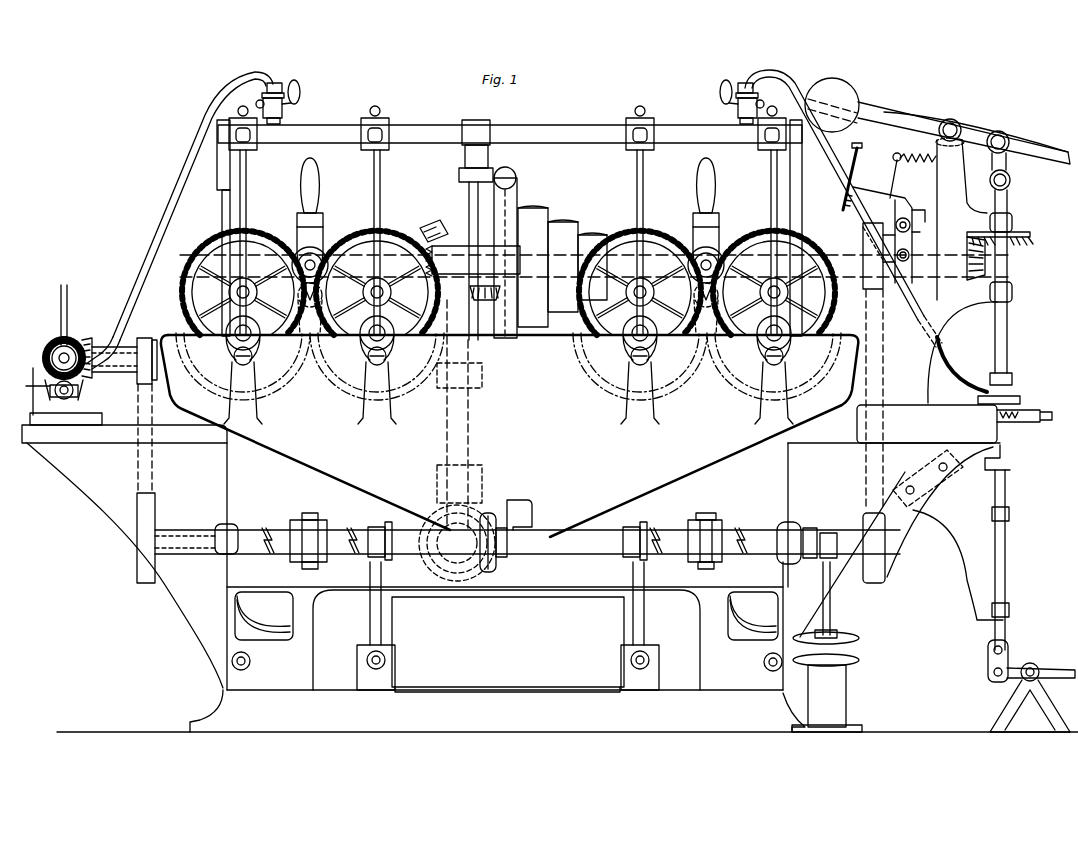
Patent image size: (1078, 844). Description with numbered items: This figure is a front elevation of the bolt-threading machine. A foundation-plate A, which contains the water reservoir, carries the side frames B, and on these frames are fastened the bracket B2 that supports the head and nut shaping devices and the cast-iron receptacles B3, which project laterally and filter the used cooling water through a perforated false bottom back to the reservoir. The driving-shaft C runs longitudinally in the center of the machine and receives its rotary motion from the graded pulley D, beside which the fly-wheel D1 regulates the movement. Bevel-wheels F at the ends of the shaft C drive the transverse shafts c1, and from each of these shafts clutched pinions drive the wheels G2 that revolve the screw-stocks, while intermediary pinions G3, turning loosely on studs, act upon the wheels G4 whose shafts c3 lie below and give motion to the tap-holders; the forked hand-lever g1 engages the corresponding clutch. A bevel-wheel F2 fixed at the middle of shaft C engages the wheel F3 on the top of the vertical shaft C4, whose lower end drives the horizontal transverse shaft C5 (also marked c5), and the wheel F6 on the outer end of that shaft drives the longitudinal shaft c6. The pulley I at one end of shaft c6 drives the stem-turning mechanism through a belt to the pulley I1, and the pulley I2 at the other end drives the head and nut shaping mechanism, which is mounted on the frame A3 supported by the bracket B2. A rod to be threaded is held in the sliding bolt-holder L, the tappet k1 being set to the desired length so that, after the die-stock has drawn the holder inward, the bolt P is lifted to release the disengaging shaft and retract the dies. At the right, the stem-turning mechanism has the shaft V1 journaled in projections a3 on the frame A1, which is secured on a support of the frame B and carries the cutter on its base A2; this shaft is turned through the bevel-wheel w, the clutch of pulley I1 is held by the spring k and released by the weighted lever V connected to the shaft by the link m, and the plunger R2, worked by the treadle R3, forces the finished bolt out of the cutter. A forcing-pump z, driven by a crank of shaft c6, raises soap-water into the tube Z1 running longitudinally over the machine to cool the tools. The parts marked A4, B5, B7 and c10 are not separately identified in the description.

The foundation-plate A is at (497, 711).
The frame A1 is at (962, 271).
The base A2 is at (954, 424).
The frame A3 is at (66, 419).
The bevel gear A4 is at (59, 350).
The frame B is at (505, 586).
The bracket B2 is at (124, 557).
The receptacle B3 is at (509, 436).
The frame leg B5 is at (948, 532).
The frame portion B7 is at (891, 566).
The driving-shaft C is at (473, 261).
The vertical shaft C4 is at (462, 416).
The horizontal transverse shaft C5 is at (458, 570).
The transverse shaft c1 is at (475, 255).
The shaft c3 is at (489, 321).
The horizontal transverse shaft c5 is at (764, 227).
The longitudinal shaft c6 is at (527, 546).
The bolt c10 is at (507, 667).
The graded pulley D is at (562, 266).
The fly-wheel D1 is at (505, 253).
The bevel-wheel F is at (524, 246).
The bevel-wheel F2 is at (445, 240).
The bevel-wheel F3 is at (474, 300).
The wheel F6 is at (520, 568).
The wheel G2 is at (509, 276).
The intermediary pinion G3 is at (508, 362).
The wheel G4 is at (506, 314).
The forked hand-lever g1 is at (314, 185).
The pulley I is at (886, 556).
The pulley I1 is at (873, 228).
The pulley I2 is at (137, 566).
The spring k is at (897, 160).
The tappet k1 is at (852, 175).
The sliding bolt-holder L is at (517, 370).
The link m is at (998, 160).
The bolt P is at (131, 415).
The plunger R2 is at (1006, 562).
The treadle R3 is at (1032, 697).
The weighted lever V is at (937, 121).
The shaft V1 is at (978, 370).
The bevel-wheel w is at (1006, 257).
The forcing-pump z is at (848, 602).
The tube Z1 is at (510, 134).
The projection a3 is at (1001, 281).